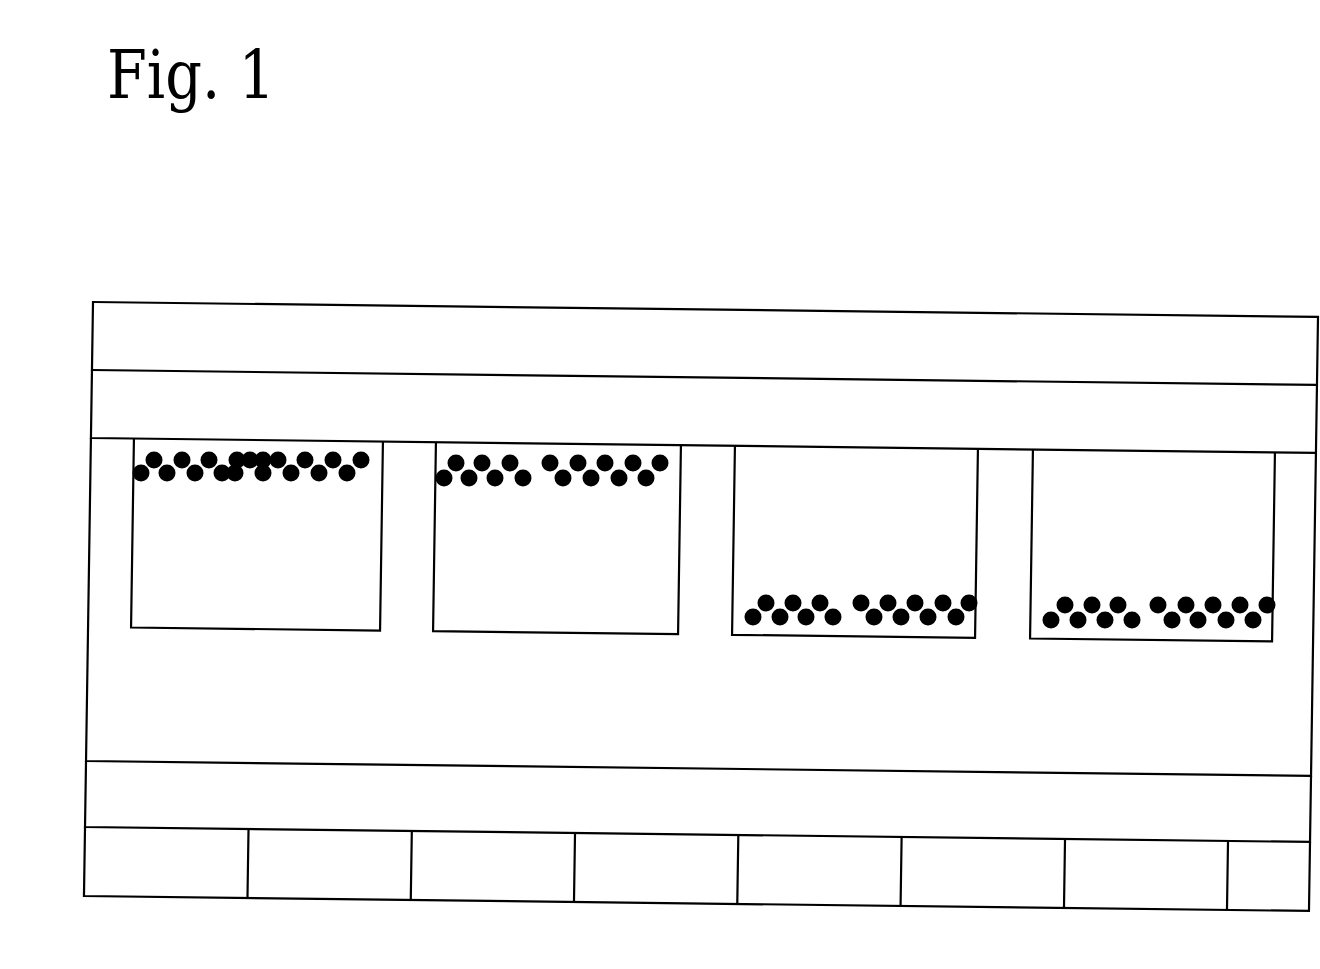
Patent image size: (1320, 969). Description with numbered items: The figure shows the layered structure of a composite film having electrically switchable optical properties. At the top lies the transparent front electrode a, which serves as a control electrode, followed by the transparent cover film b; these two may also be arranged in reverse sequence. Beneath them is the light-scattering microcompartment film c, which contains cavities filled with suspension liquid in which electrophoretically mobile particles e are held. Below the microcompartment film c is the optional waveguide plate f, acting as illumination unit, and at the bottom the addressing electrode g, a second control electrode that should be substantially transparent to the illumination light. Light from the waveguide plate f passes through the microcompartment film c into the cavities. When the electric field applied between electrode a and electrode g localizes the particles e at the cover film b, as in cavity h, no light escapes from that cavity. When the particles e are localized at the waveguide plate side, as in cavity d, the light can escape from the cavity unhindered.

The transparent front electrode a is at (705, 340).
The transparent cover film b is at (704, 409).
The light-scattering microcompartment film c is at (701, 607).
The cavity containing suspension liquid d is at (1152, 545).
The electrophoretically mobile particles e is at (1057, 570).
The waveguide plate f is at (698, 793).
The addressing electrode g is at (697, 862).
The cavity with particles at cover film h is at (557, 538).